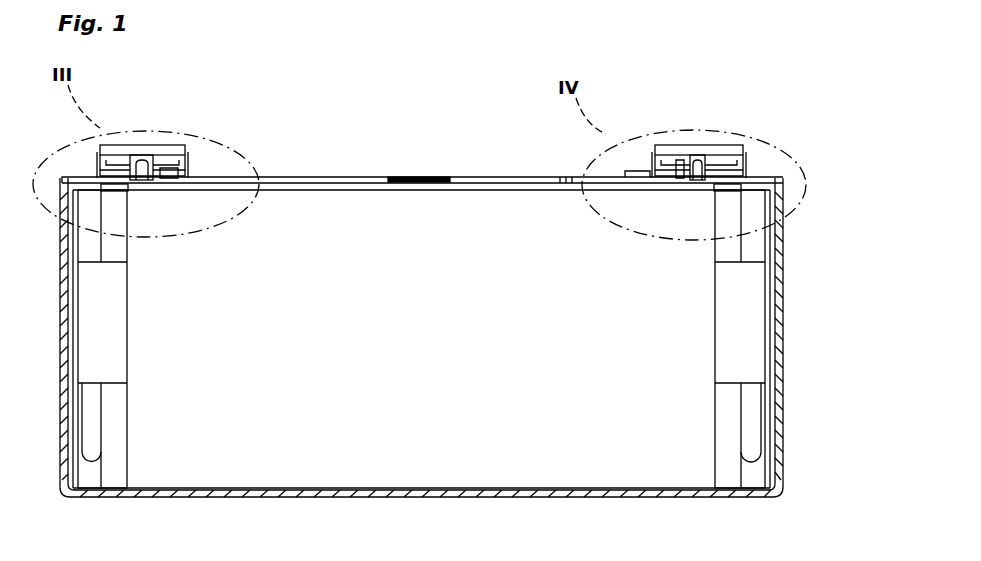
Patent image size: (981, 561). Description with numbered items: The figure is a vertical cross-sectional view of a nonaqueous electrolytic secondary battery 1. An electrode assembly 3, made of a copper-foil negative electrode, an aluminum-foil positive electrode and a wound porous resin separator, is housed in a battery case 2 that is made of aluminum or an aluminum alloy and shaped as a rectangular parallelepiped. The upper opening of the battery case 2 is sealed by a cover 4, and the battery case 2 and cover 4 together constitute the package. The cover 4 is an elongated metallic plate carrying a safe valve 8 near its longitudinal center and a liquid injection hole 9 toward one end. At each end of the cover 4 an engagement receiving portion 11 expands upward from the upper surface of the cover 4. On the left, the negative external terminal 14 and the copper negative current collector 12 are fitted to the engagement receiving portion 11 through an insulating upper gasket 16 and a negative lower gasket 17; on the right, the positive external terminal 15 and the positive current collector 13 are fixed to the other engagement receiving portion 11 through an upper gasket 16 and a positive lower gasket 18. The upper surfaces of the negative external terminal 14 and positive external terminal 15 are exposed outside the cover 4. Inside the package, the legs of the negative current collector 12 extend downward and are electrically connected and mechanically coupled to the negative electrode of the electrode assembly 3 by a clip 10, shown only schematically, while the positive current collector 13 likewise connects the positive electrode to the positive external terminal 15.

The nonaqueous electrolytic secondary battery 1 is at (768, 112).
The battery case 2 is at (290, 497).
The electrode assembly 3 is at (404, 478).
The cover 4 is at (320, 176).
The safe valve 8 is at (424, 177).
The liquid injection hole 9 is at (562, 177).
The clip 10 is at (92, 355).
The engagement receiving portion 11 is at (172, 168).
The negative current collector 12 is at (102, 452).
The positive current collector 13 is at (740, 452).
The negative external terminal 14 is at (165, 140).
The positive external terminal 15 is at (716, 142).
The upper gasket 16 is at (100, 152).
The negative lower gasket 17 is at (172, 182).
The positive lower gasket 18 is at (680, 160).